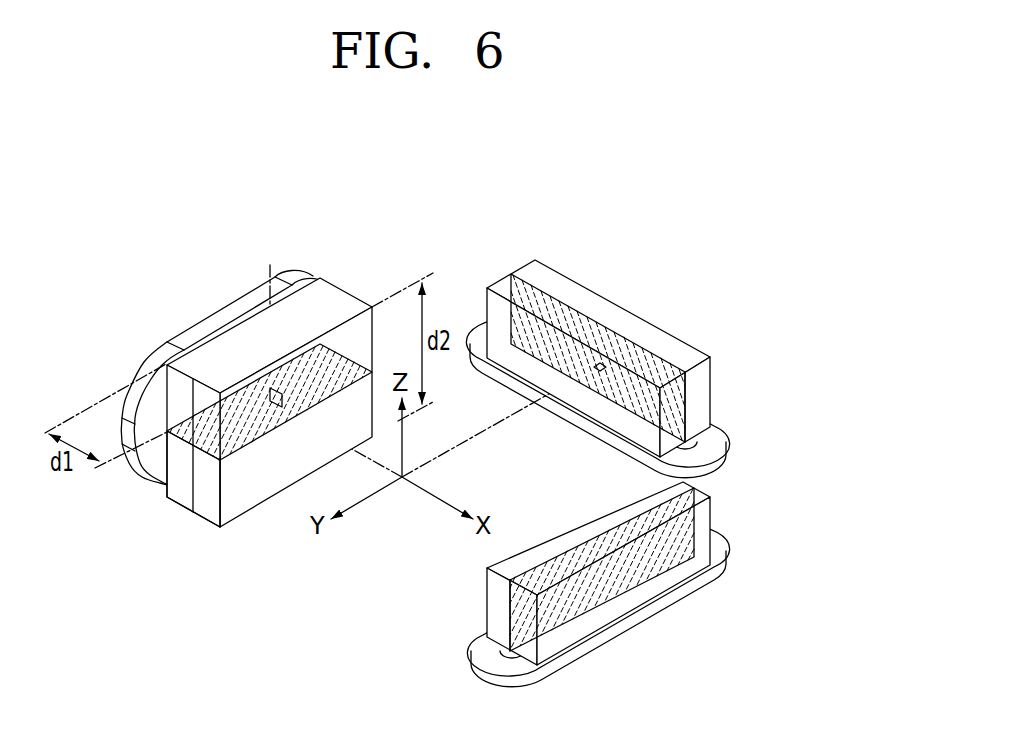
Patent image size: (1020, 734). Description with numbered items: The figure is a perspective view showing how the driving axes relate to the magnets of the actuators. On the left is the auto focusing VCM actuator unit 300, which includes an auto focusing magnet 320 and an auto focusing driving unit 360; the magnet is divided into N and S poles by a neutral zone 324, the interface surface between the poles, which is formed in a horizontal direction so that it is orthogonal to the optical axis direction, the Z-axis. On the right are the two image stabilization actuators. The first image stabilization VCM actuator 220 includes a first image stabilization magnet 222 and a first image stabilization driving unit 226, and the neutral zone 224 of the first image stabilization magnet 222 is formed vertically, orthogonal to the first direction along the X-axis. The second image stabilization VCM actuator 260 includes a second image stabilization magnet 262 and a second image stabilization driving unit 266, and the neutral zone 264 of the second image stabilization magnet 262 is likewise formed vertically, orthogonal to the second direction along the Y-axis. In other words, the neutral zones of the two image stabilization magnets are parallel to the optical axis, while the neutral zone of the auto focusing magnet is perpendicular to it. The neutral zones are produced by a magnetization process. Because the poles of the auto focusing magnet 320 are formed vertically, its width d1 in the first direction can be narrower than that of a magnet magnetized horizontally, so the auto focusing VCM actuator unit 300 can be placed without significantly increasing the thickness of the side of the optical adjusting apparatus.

The auto focusing VCM actuator unit 300 is at (208, 292).
The auto focusing magnet 320 is at (348, 302).
The neutral zone 324 is at (200, 433).
The auto focusing driving unit 360 is at (289, 266).
The second image stabilization VCM actuator 260 is at (621, 296).
The second image stabilization magnet 262 is at (652, 333).
The neutral zone 264 is at (665, 358).
The second image stabilization driving unit 266 is at (720, 465).
The first image stabilization VCM actuator 220 is at (648, 648).
The first image stabilization magnet 222 is at (699, 517).
The neutral zone 224 is at (567, 603).
The first image stabilization driving unit 226 is at (715, 577).